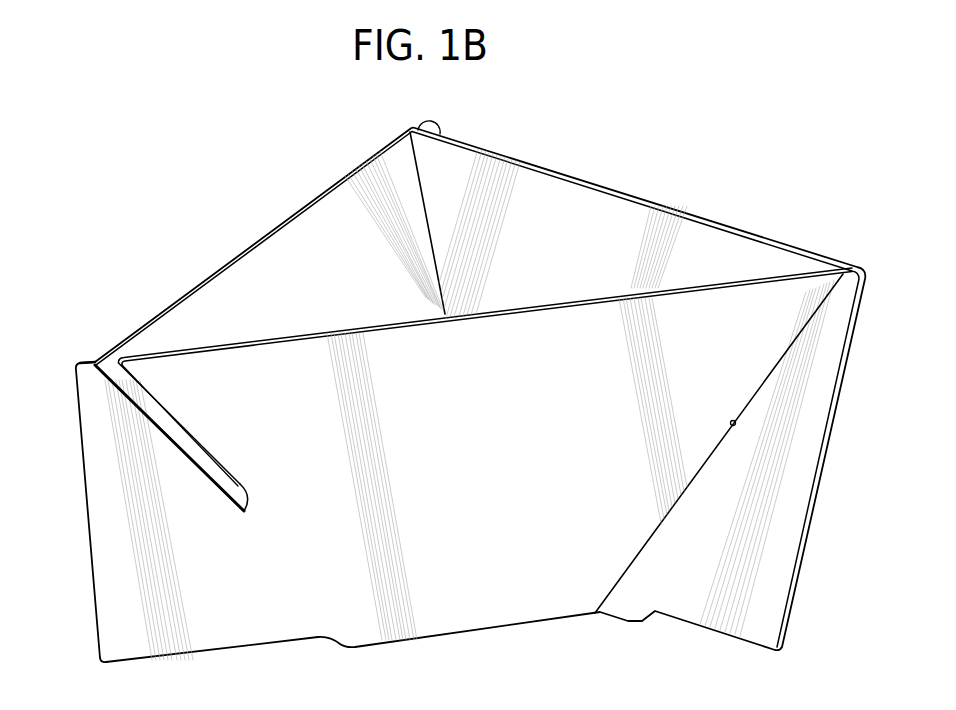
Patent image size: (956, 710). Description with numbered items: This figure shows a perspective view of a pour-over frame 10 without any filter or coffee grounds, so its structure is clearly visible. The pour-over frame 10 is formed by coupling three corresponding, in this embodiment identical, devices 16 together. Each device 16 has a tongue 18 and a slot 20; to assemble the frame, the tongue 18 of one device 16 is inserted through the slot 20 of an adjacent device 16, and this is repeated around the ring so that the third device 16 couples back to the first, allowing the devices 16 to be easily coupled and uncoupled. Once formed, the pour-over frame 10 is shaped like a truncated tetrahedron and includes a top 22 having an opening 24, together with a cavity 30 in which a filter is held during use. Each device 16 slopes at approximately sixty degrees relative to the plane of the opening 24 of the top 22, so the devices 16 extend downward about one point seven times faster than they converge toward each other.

The pour-over frame 10 is at (265, 152).
The device 16 is at (385, 148).
The tongue 18 is at (222, 491).
The slot 20 is at (424, 166).
The top 22 is at (275, 226).
The opening 24 is at (532, 163).
The cavity 30 is at (506, 283).